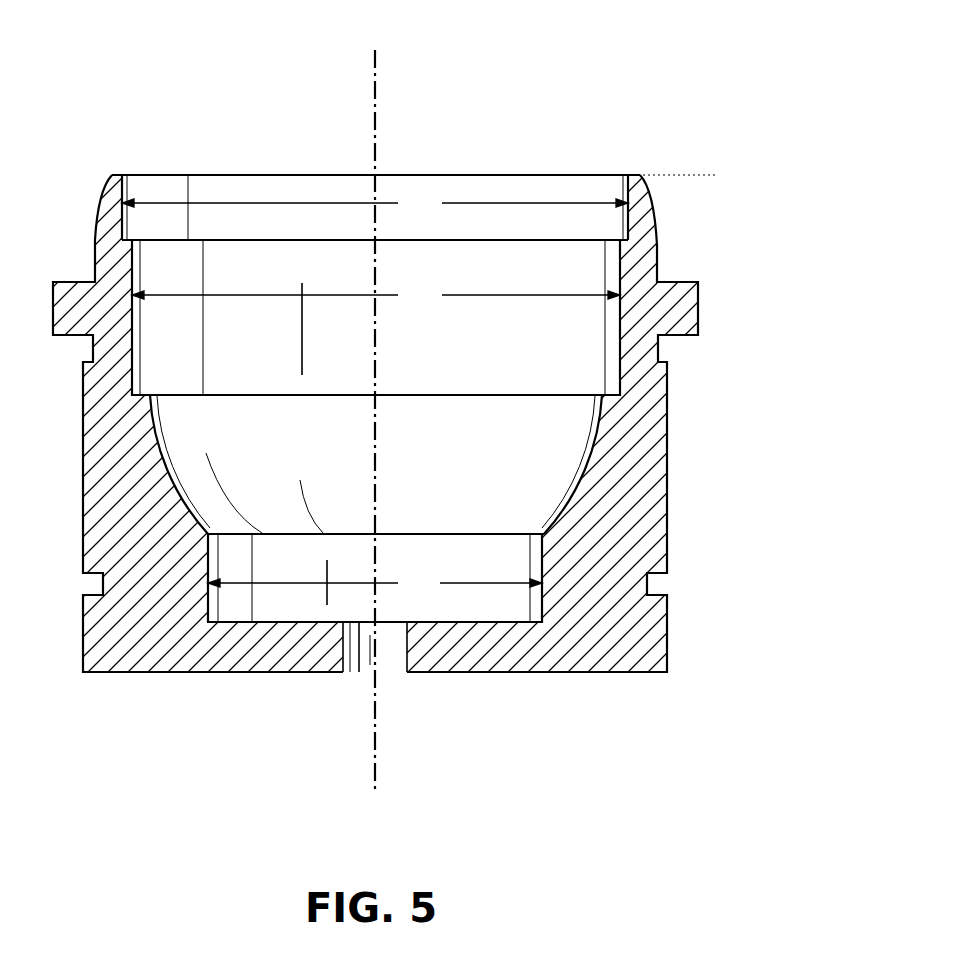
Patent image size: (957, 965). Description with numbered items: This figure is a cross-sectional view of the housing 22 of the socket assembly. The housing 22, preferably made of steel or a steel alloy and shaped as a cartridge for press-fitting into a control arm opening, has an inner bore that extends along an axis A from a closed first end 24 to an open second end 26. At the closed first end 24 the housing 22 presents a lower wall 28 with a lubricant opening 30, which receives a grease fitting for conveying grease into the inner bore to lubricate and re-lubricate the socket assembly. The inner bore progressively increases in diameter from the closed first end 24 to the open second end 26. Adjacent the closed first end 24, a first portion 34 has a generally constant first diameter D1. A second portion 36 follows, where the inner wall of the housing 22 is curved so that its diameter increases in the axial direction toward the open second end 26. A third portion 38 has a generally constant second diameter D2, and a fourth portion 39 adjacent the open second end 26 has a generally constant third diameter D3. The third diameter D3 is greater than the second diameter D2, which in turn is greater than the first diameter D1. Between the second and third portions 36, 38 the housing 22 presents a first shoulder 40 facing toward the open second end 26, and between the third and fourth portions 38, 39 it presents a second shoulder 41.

The housing 22 is at (412, 383).
The closed first end 24 is at (476, 673).
The open second end 26 is at (430, 175).
The lower wall 28 is at (514, 645).
The lubricant opening 30 is at (353, 650).
The first portion 34 is at (668, 622).
The second portion 36 is at (458, 436).
The third portion 38 is at (668, 240).
The fourth portion 39 is at (718, 175).
The first shoulder 40 is at (145, 393).
The second shoulder 41 is at (224, 237).
The axis A is at (378, 70).
The first diameter D1 is at (375, 586).
The second diameter D2 is at (376, 298).
The third diameter D3 is at (375, 206).